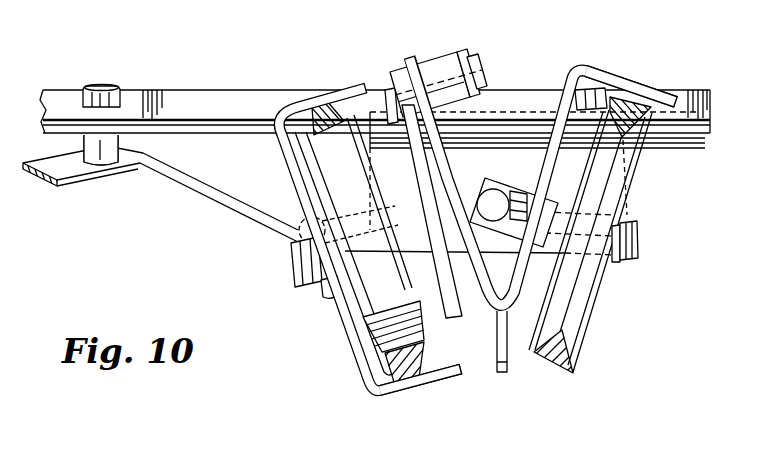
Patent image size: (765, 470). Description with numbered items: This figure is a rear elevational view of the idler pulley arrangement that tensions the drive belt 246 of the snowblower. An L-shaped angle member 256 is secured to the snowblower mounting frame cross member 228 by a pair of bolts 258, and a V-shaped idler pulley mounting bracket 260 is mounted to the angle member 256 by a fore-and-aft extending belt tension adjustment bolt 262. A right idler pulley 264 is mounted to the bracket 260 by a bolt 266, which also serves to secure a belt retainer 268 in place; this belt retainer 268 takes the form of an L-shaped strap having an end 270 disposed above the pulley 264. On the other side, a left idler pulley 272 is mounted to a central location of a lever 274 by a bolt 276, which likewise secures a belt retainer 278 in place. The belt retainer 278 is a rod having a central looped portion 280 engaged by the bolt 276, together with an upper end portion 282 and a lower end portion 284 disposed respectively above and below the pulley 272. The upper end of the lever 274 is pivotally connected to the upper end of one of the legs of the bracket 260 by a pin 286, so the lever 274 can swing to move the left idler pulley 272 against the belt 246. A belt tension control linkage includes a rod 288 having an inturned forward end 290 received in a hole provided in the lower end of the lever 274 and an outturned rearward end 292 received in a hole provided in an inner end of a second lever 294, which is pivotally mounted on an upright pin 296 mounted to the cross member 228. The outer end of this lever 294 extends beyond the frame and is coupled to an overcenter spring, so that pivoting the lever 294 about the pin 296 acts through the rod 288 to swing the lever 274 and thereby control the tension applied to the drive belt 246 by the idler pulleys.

The cross member 228 is at (203, 100).
The drive belt 246 is at (393, 377).
The L-shaped angle member 256 is at (487, 169).
The bolts 258 is at (595, 87).
The V-shaped idler pulley mounting bracket 260 is at (492, 308).
The belt tension adjustment bolt 262 is at (501, 190).
The right idler pulley 264 is at (593, 315).
The bolt 266 is at (640, 247).
The belt retainer 268 is at (558, 83).
The end 270 is at (652, 84).
The left idler pulley 272 is at (360, 350).
The lever 274 is at (403, 177).
The bolt 276 is at (292, 272).
The belt retainer 278 is at (275, 170).
The central looped portion 280 is at (333, 292).
The upper end portion 282 is at (345, 83).
The lower end portion 284 is at (440, 391).
The pin 286 is at (482, 72).
The rod 288 is at (367, 327).
The inturned forward end 290 is at (522, 297).
The outturned rearward end 292 is at (299, 231).
The lever 294 is at (207, 195).
The upright pin 296 is at (100, 88).